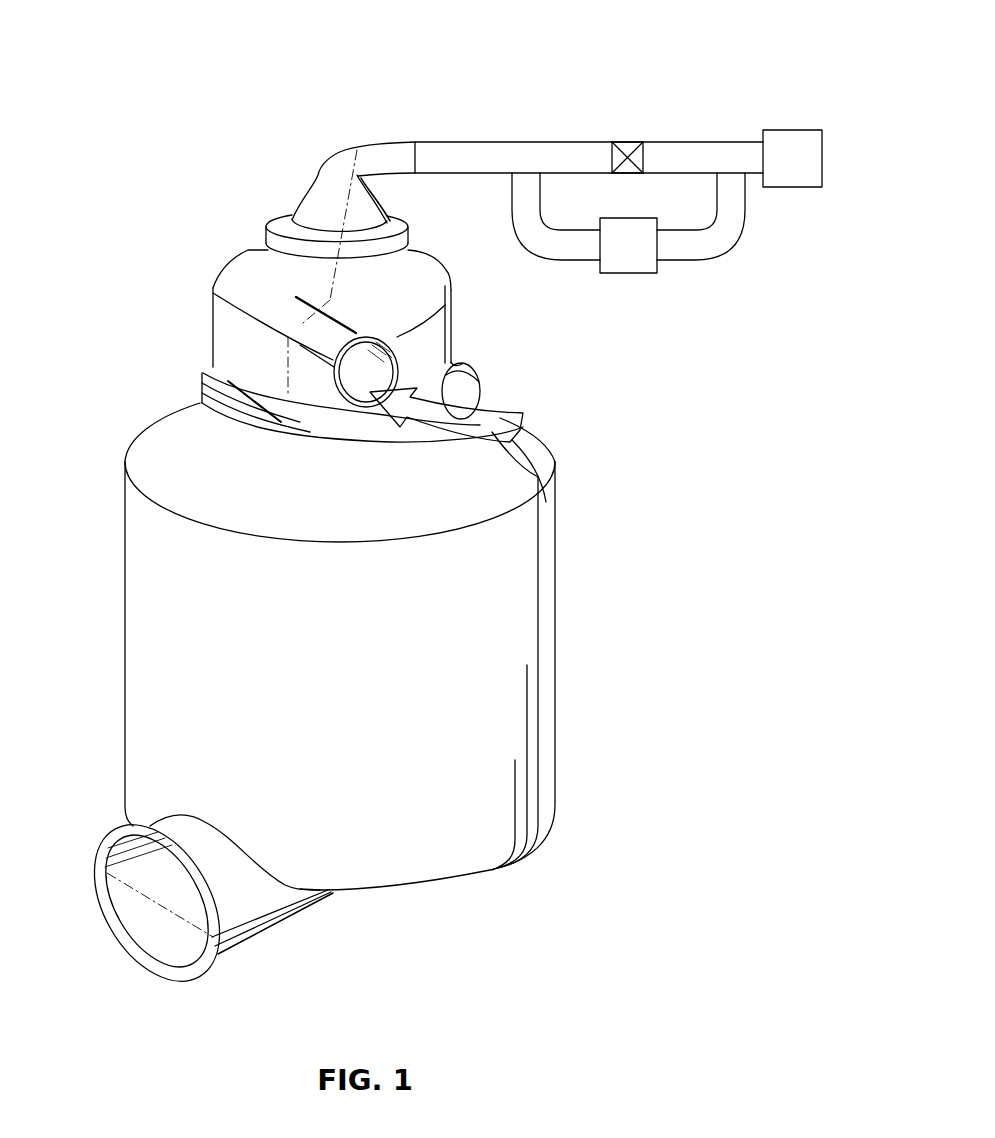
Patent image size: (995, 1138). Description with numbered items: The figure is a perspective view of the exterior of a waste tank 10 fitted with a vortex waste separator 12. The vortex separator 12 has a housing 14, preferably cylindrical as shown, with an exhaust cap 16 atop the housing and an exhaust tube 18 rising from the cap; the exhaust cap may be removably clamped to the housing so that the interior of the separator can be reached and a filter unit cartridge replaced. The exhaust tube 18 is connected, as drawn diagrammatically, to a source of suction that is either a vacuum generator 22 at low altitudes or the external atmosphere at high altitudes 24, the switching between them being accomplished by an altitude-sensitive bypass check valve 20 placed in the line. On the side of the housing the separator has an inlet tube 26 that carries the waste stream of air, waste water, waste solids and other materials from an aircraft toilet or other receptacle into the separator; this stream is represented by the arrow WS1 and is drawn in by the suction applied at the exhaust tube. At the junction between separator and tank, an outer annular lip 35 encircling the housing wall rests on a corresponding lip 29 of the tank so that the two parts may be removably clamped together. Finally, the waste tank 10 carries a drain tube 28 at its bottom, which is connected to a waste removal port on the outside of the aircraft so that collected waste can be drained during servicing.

The waste tank 10 is at (582, 668).
The vortex waste separator 12 is at (258, 178).
The housing 14 is at (300, 293).
The exhaust cap 16 is at (300, 193).
The exhaust tube 18 is at (387, 130).
The altitude-sensitive bypass check valve 20 is at (628, 142).
The vacuum generator 22 is at (630, 262).
The external atmosphere at high altitudes 24 is at (792, 158).
The inlet tube 26 is at (322, 341).
The drain tube 28 is at (150, 923).
The lip 29 is at (327, 433).
The outer annular lip 35 is at (203, 378).
The waste stream arrow WS1 is at (555, 477).